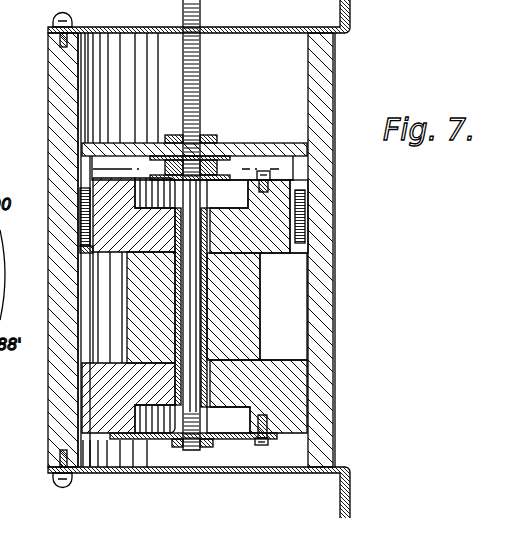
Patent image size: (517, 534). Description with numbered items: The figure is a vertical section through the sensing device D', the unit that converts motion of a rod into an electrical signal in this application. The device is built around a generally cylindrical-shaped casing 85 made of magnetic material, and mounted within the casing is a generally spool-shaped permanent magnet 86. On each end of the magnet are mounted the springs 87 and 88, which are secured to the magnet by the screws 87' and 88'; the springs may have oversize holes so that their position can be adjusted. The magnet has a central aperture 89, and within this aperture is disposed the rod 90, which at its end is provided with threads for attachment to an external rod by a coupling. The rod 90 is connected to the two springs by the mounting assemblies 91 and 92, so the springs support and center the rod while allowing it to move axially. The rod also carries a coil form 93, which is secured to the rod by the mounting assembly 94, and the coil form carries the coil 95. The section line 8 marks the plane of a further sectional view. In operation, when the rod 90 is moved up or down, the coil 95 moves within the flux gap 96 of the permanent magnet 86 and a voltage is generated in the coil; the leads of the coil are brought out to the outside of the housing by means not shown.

The section line 8- 8 is at (101, 173).
The casing 85 is at (325, 305).
The permanent magnet 86 is at (290, 395).
The spring 87 is at (193, 468).
The screw 87' is at (276, 439).
The spring 88 is at (206, 136).
The screw 88' is at (258, 157).
The aperture 89 is at (203, 295).
The rod 90 is at (195, 323).
The mounting assembly 91 is at (178, 442).
The mounting assembly 92 is at (218, 172).
The coil form 93 is at (80, 150).
The mounting assembly 94 is at (174, 134).
The coil 95 is at (80, 207).
The flux gap 96 is at (83, 248).
The sensing device D' is at (220, 259).